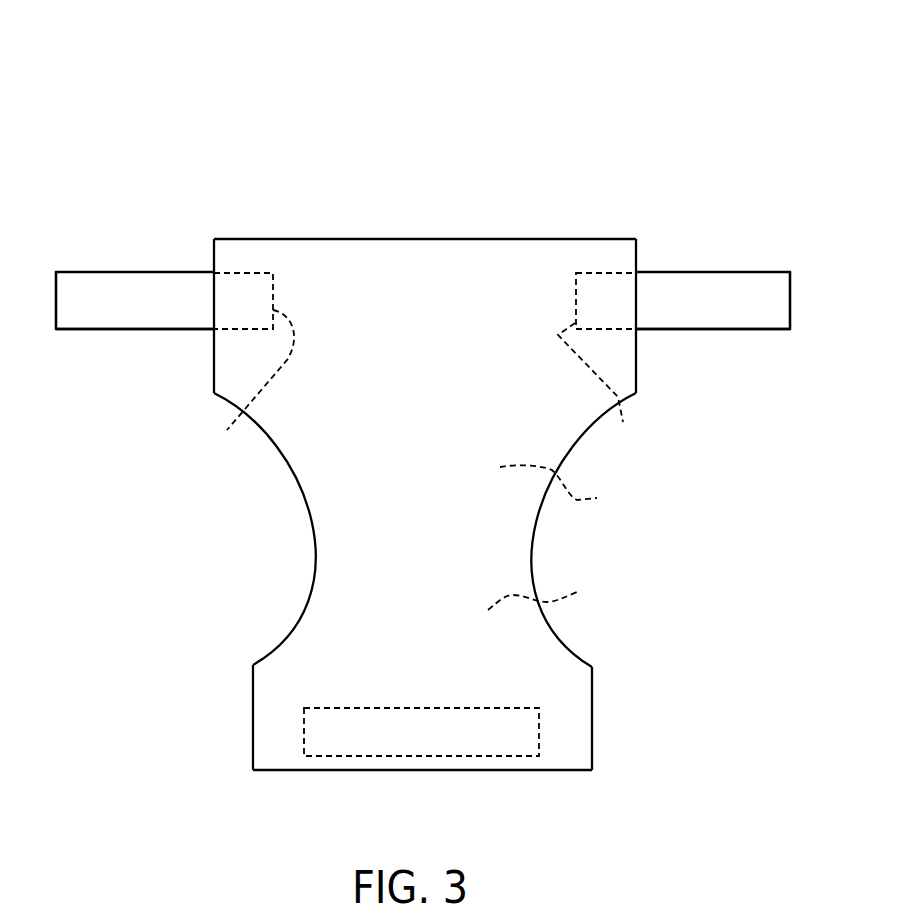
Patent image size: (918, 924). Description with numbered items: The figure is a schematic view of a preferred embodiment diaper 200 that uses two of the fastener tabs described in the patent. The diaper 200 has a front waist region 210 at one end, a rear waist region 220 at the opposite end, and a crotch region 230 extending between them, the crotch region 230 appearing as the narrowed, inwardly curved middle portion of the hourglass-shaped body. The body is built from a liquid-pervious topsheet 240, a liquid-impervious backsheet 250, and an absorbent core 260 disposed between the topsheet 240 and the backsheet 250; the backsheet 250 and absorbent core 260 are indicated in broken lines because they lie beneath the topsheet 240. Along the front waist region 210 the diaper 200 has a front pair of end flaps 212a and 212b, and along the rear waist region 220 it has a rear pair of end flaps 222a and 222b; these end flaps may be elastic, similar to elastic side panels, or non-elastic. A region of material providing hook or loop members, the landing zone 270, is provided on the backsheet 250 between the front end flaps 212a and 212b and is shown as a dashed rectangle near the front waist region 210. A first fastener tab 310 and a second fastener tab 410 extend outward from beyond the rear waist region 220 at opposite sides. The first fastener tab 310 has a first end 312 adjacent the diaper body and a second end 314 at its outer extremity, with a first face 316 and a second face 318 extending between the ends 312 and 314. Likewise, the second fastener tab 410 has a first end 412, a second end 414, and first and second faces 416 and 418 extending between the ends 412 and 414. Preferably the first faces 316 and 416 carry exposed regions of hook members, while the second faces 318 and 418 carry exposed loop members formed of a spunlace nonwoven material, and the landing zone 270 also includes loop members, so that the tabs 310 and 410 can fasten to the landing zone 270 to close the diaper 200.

The diaper 200 is at (747, 69).
The front waist region 210 is at (423, 763).
The front end flap 212a is at (268, 730).
The front end flap 212b is at (577, 727).
The rear waist region 220 is at (438, 252).
The rear end flap 222a is at (242, 297).
The rear end flap 222b is at (623, 295).
The crotch region 230 is at (407, 552).
The topsheet 240 is at (445, 497).
The backsheet 250 is at (566, 489).
The absorbent core 260 is at (552, 594).
The landing zone 270 is at (362, 735).
The first fastener tab 310 is at (135, 293).
The first end 312 is at (251, 386).
The second end 314 is at (55, 317).
The first face 316 is at (112, 313).
The second face 318 is at (80, 293).
The second fastener tab 410 is at (748, 297).
The first end 412 is at (600, 387).
The second end 414 is at (792, 312).
The first face 416 is at (765, 315).
The second face 418 is at (688, 292).